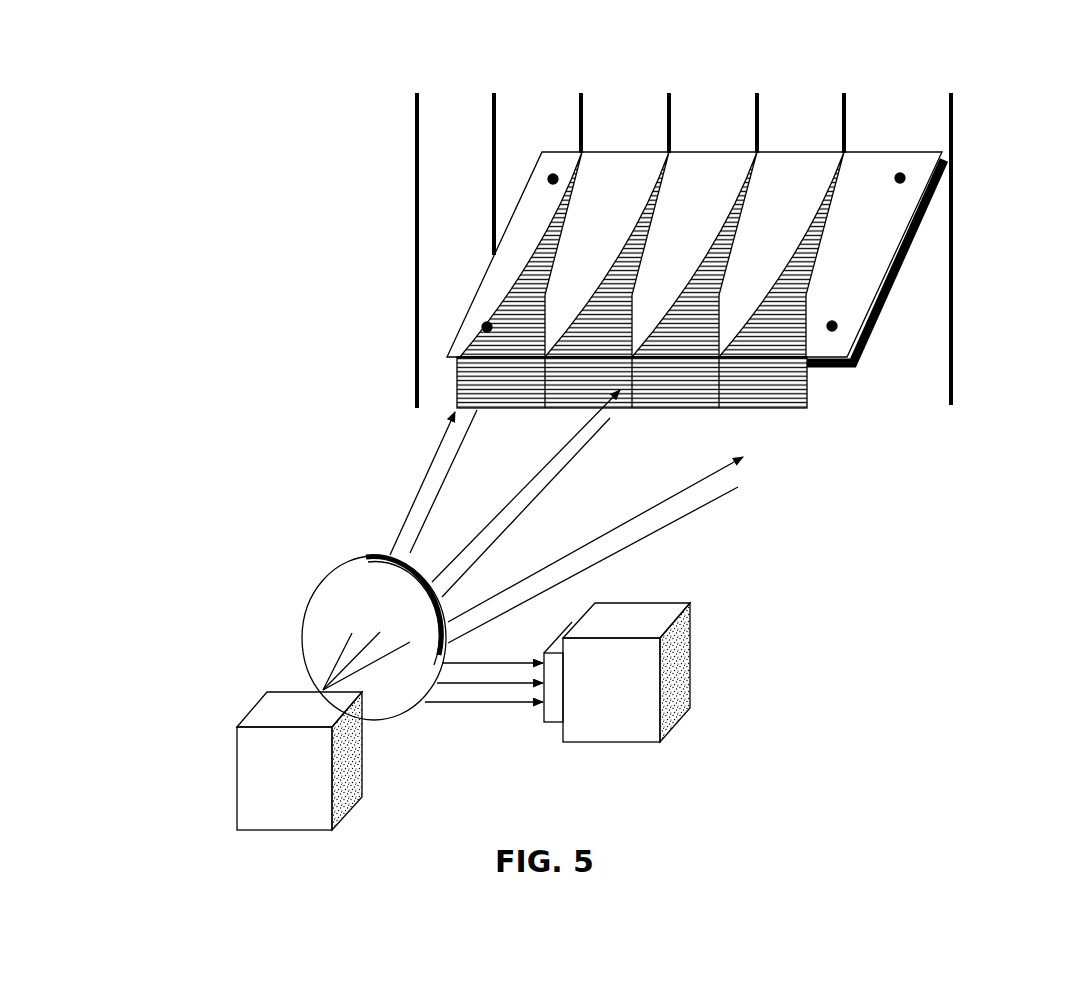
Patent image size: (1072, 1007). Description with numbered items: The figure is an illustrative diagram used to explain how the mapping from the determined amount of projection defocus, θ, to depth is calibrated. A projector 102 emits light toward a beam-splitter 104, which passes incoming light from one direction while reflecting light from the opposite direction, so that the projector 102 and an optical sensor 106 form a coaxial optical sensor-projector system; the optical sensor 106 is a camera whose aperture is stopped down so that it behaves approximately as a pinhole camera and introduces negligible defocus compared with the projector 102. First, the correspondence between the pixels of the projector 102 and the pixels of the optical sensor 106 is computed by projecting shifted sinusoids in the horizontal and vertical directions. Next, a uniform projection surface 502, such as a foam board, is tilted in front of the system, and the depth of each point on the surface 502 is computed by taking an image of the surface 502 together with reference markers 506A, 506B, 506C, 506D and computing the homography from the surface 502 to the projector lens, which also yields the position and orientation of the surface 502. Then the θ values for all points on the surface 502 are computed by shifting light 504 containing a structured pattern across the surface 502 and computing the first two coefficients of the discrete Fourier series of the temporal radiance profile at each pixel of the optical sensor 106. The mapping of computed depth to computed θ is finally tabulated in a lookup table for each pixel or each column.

The projector 102 is at (237, 752).
The beam-splitter 104 is at (323, 595).
The optical sensor 106 is at (680, 663).
The projection surface 502 is at (713, 232).
The light 504 is at (665, 264).
The reference marker 506A is at (498, 208).
The reference marker 506B is at (969, 205).
The reference marker 506C is at (426, 348).
The reference marker 506D is at (882, 349).